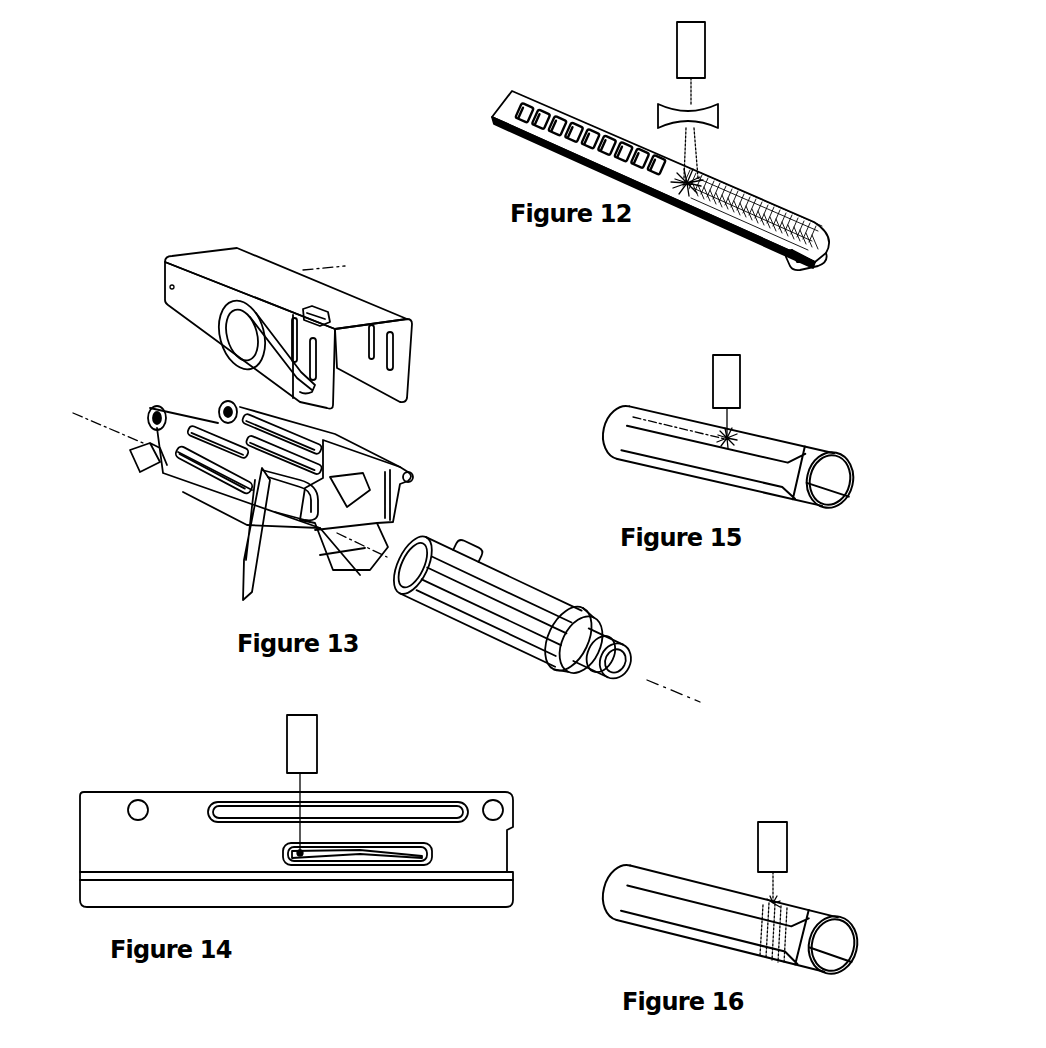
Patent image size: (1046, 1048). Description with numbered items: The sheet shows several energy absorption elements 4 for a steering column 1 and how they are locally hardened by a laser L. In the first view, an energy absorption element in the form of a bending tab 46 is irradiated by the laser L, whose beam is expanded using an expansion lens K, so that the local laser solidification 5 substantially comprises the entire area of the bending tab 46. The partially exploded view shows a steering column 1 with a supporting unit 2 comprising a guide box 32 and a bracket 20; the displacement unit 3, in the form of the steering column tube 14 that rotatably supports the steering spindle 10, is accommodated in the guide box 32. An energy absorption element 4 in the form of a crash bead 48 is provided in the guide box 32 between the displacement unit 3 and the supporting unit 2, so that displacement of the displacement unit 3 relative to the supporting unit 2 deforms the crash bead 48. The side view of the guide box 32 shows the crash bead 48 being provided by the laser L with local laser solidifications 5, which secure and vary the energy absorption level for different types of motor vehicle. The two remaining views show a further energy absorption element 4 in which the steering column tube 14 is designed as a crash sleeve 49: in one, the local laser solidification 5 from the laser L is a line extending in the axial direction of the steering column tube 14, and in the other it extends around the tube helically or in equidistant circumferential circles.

In FIG. 13, the steering column 1 is at (163, 288).
In FIG. 13, the supporting unit 2 is at (272, 238).
In FIG. 13, the displacement unit 3 is at (551, 595).
In FIG. 12, the energy absorption element 4 is at (588, 90).
In FIG. 13, the energy absorption element 4 is at (207, 483).
In FIG. 15, the energy absorption element 4 is at (812, 422).
In FIG. 14, the energy absorption element 4 is at (346, 870).
In FIG. 16, the energy absorption element 4 is at (708, 866).
In FIG. 12, the local laser solidification 5 is at (747, 225).
In FIG. 15, the local laser solidification 5 is at (672, 425).
In FIG. 14, the local laser solidification 5 is at (323, 867).
In FIG. 16, the local laser solidification 5 is at (770, 963).
In FIG. 13, the steering spindle 10 is at (592, 637).
In FIG. 13, the steering column tube 14 is at (513, 578).
In FIG. 15, the steering column tube 14 is at (783, 484).
In FIG. 16, the steering column tube 14 is at (645, 903).
In FIG. 13, the bracket 20 is at (347, 311).
In FIG. 13, the guide box 32 is at (223, 491).
In FIG. 12, the bending tab 46 is at (513, 107).
In FIG. 13, the crash bead 48 is at (243, 486).
In FIG. 14, the crash bead 48 is at (415, 867).
In FIG. 15, the crash sleeve 49 is at (638, 440).
In FIG. 16, the crash sleeve 49 is at (702, 942).
In FIG. 12, the laser L is at (697, 64).
In FIG. 15, the laser L is at (731, 391).
In FIG. 14, the laser L is at (306, 745).
In FIG. 16, the laser L is at (777, 858).
In FIG. 12, the expansion lens K is at (712, 112).